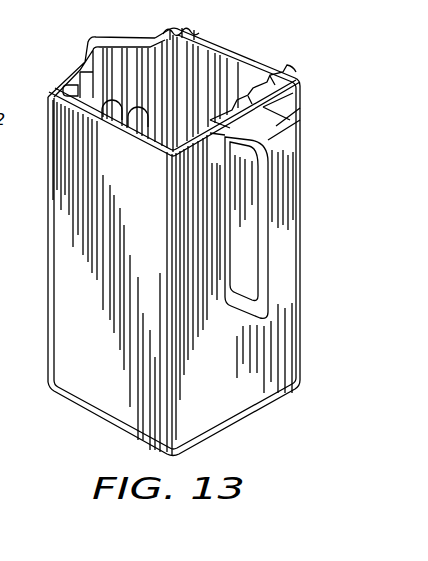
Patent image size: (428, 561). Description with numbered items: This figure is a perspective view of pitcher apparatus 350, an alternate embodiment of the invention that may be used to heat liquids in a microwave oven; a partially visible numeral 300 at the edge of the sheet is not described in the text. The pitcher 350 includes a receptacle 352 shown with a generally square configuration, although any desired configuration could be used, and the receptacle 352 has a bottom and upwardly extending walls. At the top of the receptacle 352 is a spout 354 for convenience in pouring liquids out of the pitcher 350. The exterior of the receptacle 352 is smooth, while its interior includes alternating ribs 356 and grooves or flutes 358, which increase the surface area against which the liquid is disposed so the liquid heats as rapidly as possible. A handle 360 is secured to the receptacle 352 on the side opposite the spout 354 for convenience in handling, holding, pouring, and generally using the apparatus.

The connector 300 is at (10, 50).
The pitcher apparatus 350 is at (235, 43).
The receptacle 352 is at (60, 263).
The spout 354 is at (103, 45).
The ribs 356 is at (203, 16).
The grooves or flutes 358 is at (123, 121).
The handle 360 is at (296, 188).